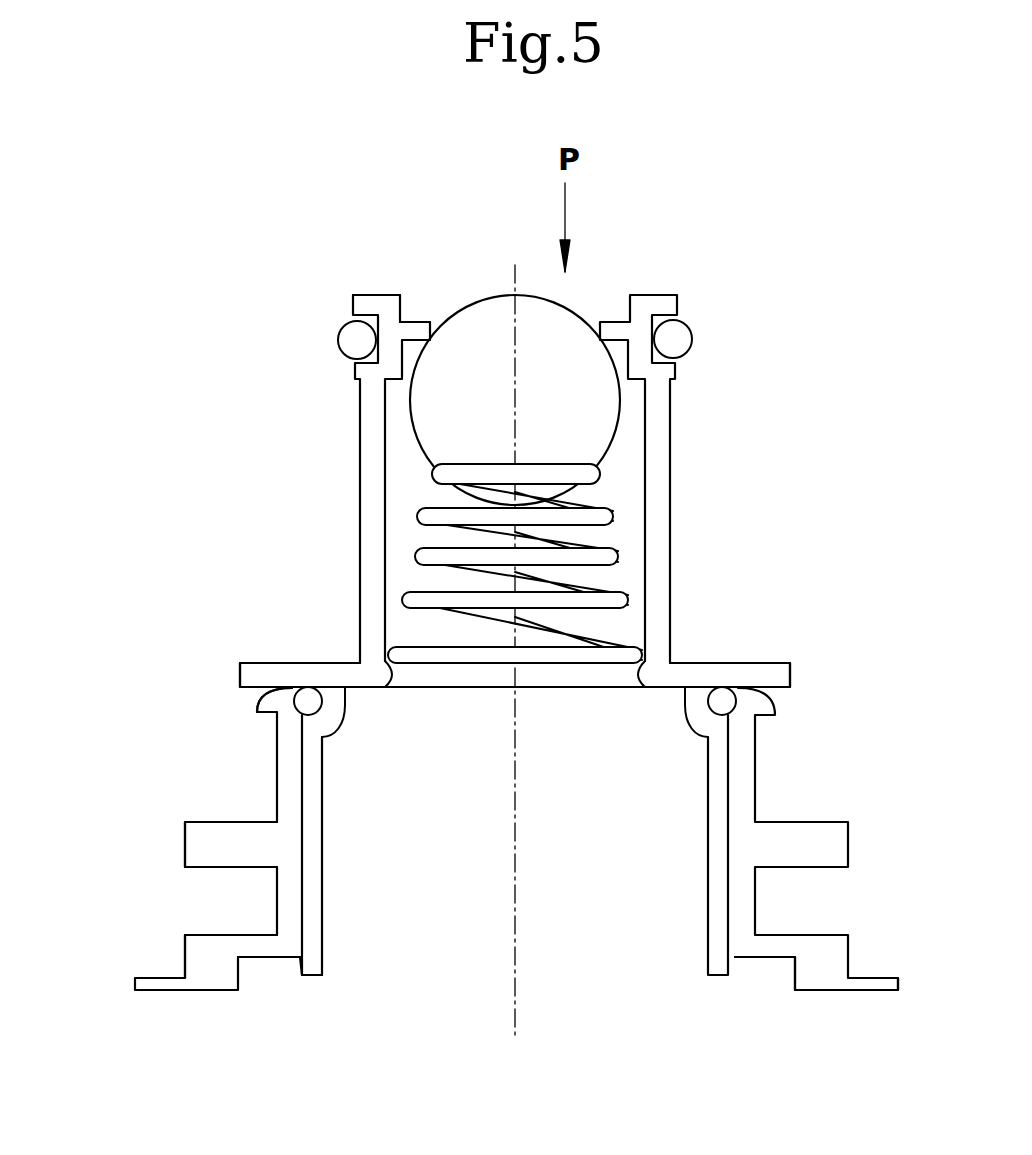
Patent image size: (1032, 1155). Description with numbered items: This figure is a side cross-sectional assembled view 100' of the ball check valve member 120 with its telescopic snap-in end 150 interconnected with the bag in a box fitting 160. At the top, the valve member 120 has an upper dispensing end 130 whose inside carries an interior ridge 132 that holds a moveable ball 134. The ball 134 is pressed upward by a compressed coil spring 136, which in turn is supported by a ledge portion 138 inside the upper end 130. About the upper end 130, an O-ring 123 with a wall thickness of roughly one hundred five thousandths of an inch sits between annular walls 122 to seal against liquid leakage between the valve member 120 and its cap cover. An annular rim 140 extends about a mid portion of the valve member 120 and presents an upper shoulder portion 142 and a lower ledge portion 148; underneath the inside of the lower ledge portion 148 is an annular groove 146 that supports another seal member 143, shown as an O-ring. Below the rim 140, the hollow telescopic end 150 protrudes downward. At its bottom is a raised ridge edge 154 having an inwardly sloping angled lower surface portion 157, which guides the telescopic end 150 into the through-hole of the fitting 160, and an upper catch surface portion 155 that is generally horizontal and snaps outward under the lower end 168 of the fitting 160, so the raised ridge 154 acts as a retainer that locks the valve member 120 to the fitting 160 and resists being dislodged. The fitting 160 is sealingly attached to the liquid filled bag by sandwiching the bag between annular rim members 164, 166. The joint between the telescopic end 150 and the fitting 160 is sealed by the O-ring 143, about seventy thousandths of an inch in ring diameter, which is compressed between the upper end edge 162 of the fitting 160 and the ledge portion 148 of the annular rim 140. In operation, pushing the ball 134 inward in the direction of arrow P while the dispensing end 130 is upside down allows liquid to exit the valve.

The assembled view 100' is at (152, 373).
The ball check valve member 120 is at (375, 543).
The annular walls 122 is at (352, 366).
The O-ring 123 is at (680, 333).
The upper dispensing end 130 is at (380, 293).
The interior ridge 132 is at (418, 327).
The moveable ball 134 is at (603, 405).
The compressed coil spring 136 is at (622, 597).
The ledge portion 138 is at (633, 690).
The annular rim 140 is at (272, 663).
The upper shoulder portion 142 is at (753, 665).
The seal member (O-ring) 143 is at (313, 707).
The annular groove 146 is at (340, 698).
The lower ledge portion 148 is at (242, 690).
The telescopic end 150 is at (320, 872).
The raised ridge edge 154 is at (335, 975).
The upper catch surface portion 155 is at (298, 957).
The inwardly sloping angled lower surface portion 157 is at (290, 970).
The bag in a box fitting 160 is at (277, 768).
The upper end edge 162 is at (257, 707).
The annular rim member 164 is at (192, 843).
The annular rim member 166 is at (197, 948).
The lower end 168 is at (745, 955).